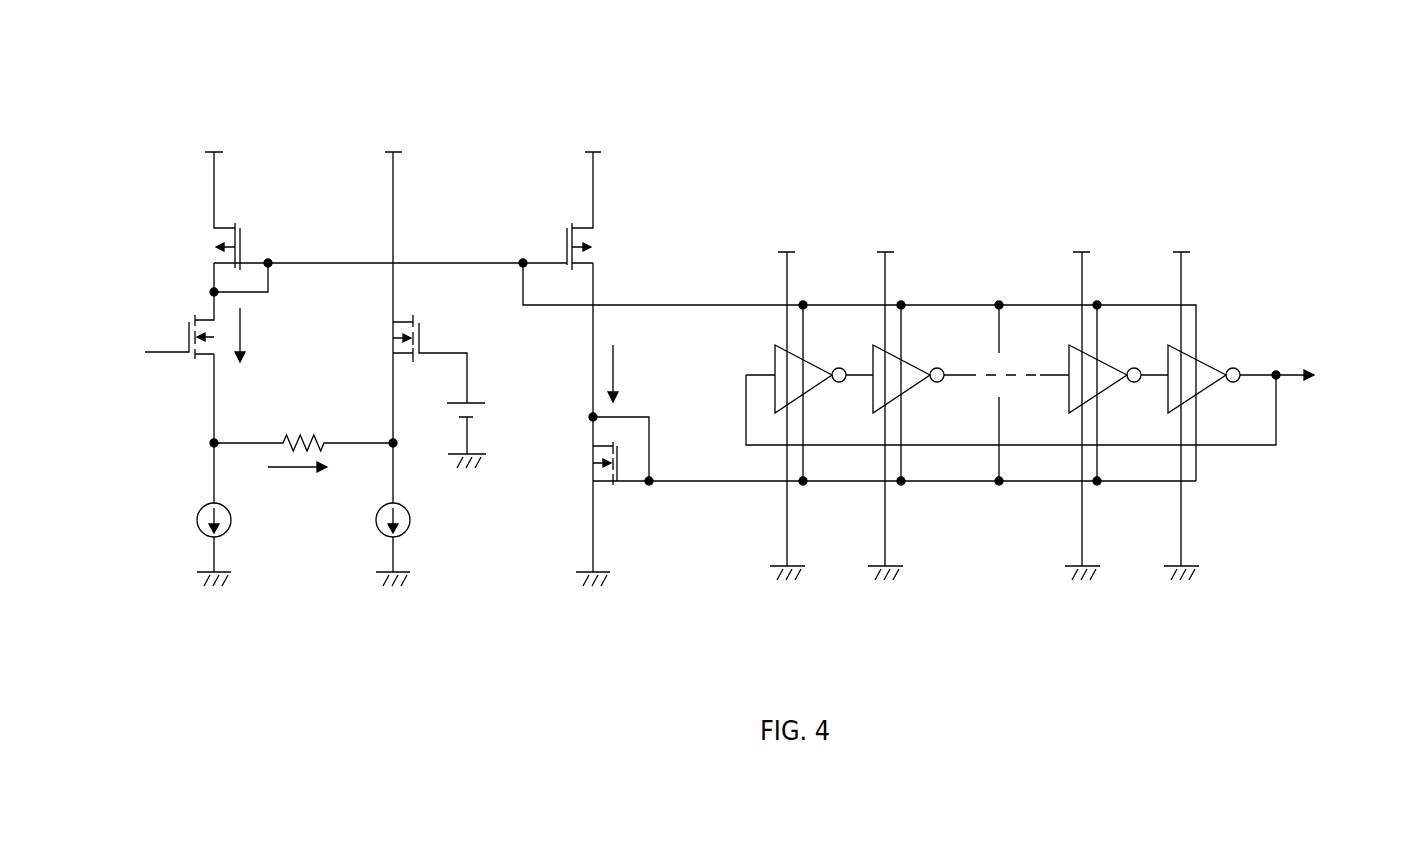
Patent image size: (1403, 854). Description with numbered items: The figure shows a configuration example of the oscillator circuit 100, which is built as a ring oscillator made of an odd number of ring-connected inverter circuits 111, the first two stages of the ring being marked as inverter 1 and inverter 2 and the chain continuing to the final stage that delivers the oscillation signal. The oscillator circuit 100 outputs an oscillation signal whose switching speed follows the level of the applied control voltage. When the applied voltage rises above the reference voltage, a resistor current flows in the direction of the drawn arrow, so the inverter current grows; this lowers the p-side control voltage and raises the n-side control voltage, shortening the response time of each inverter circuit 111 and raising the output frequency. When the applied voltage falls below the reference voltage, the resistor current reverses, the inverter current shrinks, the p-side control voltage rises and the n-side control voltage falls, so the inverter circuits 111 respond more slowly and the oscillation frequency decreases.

The oscillator circuit 100 is at (745, 319).
The inverter circuit 111 is at (1020, 385).
The first inverter 1 is at (810, 370).
The second inverter 2 is at (913, 370).